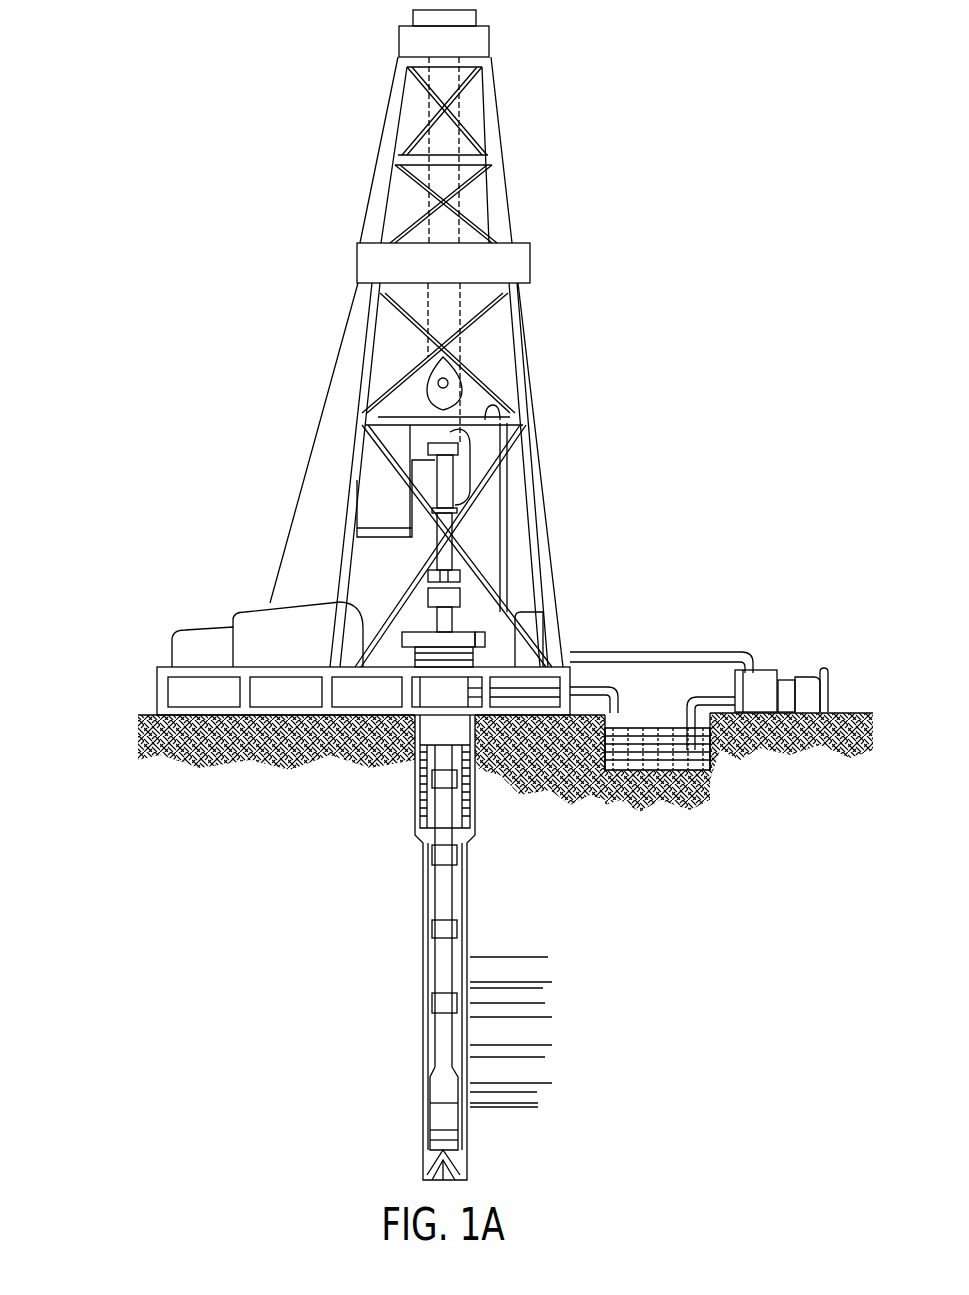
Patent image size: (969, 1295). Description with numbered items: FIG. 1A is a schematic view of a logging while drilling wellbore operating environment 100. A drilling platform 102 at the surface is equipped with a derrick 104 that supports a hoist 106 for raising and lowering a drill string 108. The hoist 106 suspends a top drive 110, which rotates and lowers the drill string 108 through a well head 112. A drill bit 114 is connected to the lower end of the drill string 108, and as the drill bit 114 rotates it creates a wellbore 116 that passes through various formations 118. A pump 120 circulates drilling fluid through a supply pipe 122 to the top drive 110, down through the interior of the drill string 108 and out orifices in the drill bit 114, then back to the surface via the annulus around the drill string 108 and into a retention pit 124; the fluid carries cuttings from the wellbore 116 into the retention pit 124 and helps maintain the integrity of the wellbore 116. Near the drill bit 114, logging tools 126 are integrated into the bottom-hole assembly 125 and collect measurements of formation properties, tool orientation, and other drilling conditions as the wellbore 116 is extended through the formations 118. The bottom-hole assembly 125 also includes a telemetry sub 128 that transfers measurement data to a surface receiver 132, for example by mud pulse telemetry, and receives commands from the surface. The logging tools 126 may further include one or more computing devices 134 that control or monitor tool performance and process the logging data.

The logging while drilling wellbore operating environment 100 is at (323, 66).
The drilling platform 102 is at (157, 687).
The derrick 104 is at (510, 188).
The hoist 106 is at (467, 387).
The drill string 108 is at (455, 893).
The top drive 110 is at (448, 470).
The well head 112 is at (467, 627).
The drill bit 114 is at (467, 1165).
The wellbore 116 is at (468, 920).
The formations 118 is at (558, 953).
The pump 120 is at (765, 675).
The supply pipe 122 is at (652, 652).
The retention pit 124 is at (652, 772).
The bottom-hole assembly 125 is at (350, 1065).
The logging tools 126 is at (433, 1113).
The telemetry sub 128 is at (433, 1085).
The surface receiver 132 is at (447, 545).
The computing devices 134 is at (442, 1123).